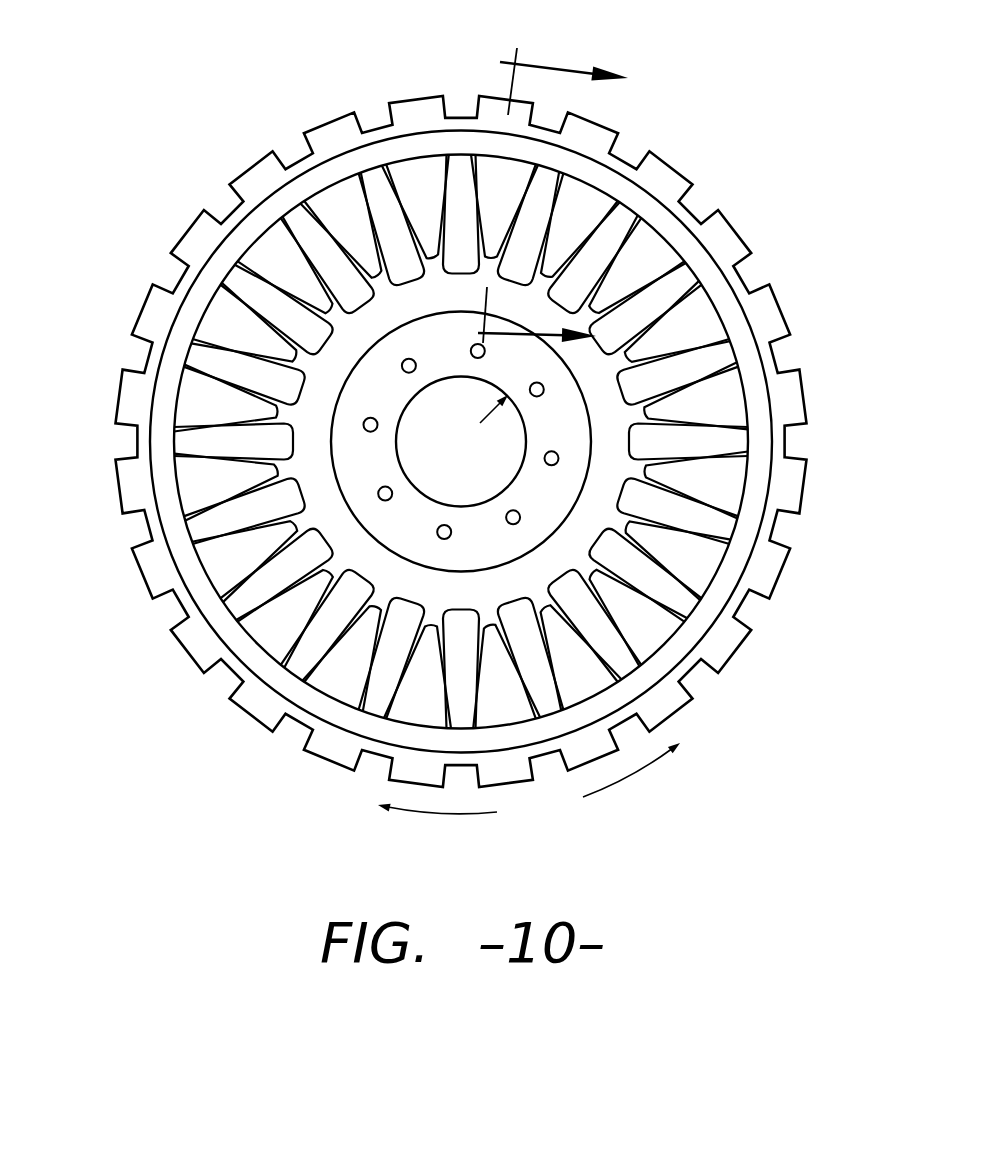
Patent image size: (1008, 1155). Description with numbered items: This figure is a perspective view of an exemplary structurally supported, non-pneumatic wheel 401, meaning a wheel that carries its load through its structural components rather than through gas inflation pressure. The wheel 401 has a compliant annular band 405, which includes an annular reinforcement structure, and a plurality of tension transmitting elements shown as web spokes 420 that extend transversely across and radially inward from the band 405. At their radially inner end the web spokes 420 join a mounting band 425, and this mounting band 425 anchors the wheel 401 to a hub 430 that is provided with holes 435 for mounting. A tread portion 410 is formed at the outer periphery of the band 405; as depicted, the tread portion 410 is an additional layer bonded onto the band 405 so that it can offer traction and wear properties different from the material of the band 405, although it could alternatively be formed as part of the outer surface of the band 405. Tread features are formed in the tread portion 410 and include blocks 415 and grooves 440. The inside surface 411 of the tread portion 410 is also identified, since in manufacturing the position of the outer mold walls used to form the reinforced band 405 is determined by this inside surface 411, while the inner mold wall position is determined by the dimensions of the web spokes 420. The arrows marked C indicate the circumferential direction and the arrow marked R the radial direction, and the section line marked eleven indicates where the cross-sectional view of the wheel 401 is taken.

The structurally supported wheel 401 is at (225, 95).
The annular band 405 is at (703, 270).
The tread portion 410 is at (500, 414).
The inside surface 411 is at (710, 637).
The blocks 415 is at (322, 115).
The web spokes 420 is at (212, 378).
The mounting band 425 is at (350, 528).
The hub 430 is at (555, 483).
The holes 435 is at (520, 516).
The grooves 440 is at (215, 198).